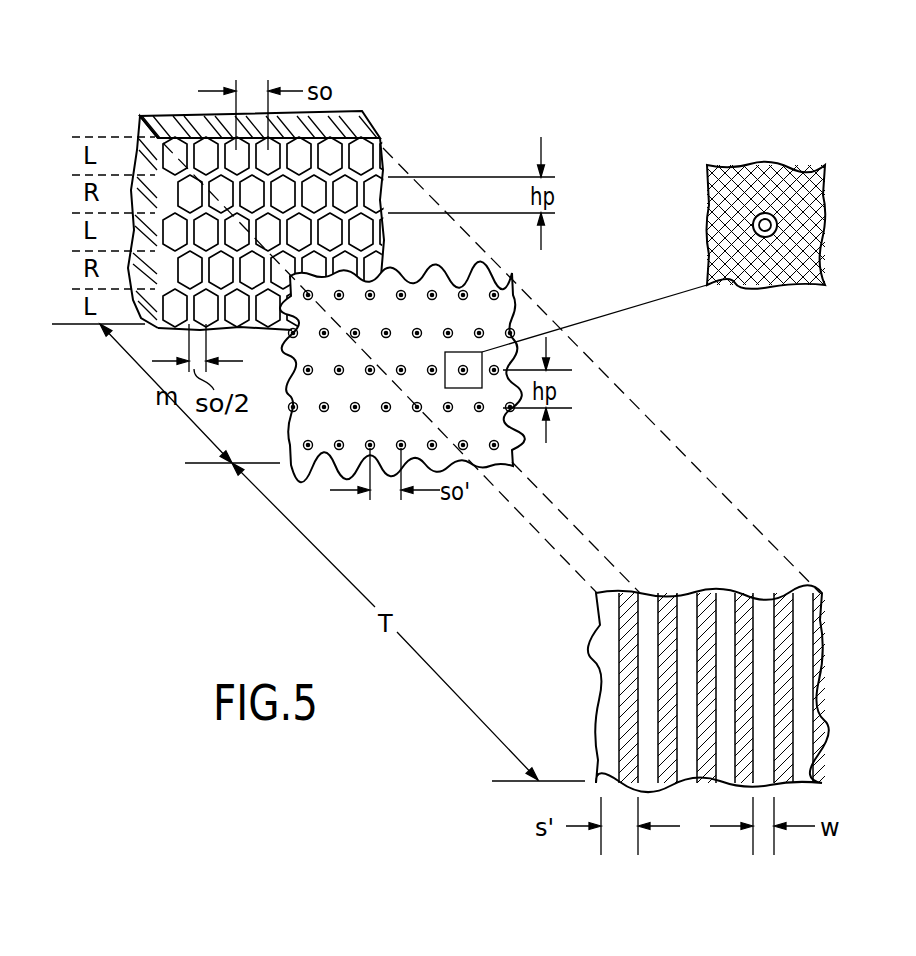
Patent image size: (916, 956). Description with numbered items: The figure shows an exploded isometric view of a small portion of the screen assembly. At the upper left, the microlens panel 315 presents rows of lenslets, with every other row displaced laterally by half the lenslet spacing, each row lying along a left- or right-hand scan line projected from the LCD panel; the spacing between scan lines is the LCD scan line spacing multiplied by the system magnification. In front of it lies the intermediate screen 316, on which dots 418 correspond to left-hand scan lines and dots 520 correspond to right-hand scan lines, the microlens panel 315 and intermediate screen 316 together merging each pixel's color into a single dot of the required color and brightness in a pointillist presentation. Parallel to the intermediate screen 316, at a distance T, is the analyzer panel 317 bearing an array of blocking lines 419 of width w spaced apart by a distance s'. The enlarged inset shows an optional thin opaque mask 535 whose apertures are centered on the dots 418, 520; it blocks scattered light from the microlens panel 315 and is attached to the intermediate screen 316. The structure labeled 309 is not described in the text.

The honeycomb cell structure 309 is at (176, 118).
The microlens panel 315 is at (328, 152).
The intermediate screen 316 is at (586, 292).
The analyzer panel 317 is at (764, 608).
The dot 418 is at (338, 447).
The blocking lines 419 is at (786, 719).
The dot 520 is at (480, 409).
The thin opaque mask 535 is at (806, 182).